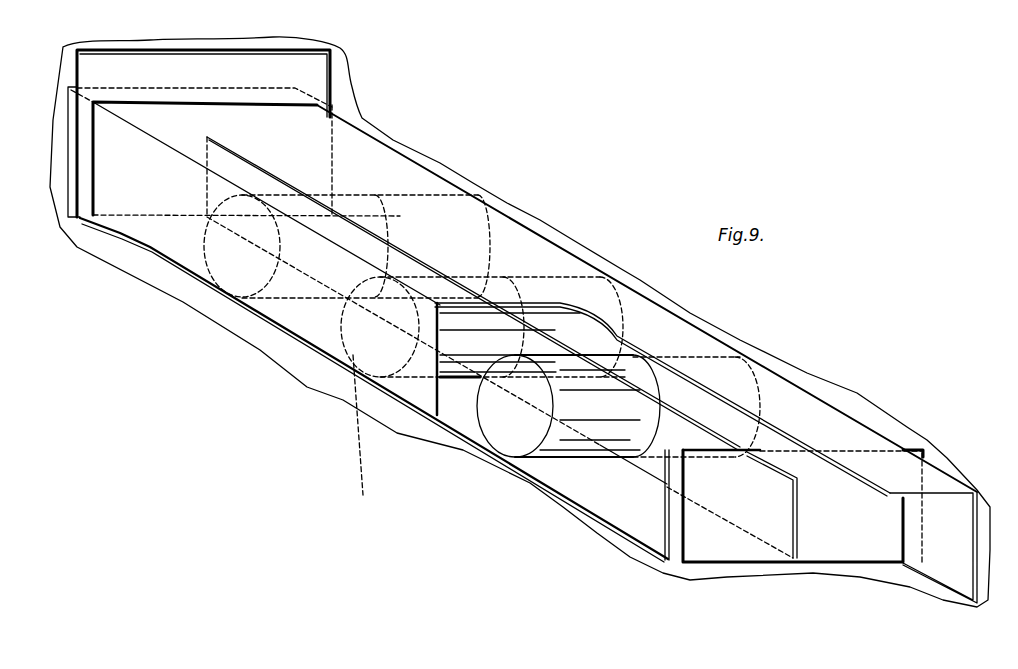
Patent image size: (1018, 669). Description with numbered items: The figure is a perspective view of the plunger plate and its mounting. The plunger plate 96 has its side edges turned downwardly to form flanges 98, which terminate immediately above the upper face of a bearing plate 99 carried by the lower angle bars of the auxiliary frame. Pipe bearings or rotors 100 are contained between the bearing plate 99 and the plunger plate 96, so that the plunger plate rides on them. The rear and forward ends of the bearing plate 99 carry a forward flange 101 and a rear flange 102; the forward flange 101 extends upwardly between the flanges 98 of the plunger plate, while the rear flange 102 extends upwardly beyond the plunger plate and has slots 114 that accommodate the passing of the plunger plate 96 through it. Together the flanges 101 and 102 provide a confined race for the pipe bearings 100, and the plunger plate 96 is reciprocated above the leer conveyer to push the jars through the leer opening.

The plunger plate 96 is at (967, 520).
The flanges 98 is at (440, 425).
The bearing plate 99 is at (608, 527).
The pipe bearings 100 is at (498, 440).
The forward flange 101 is at (710, 522).
The rear flange 102 is at (87, 142).
The slots 114 is at (253, 102).